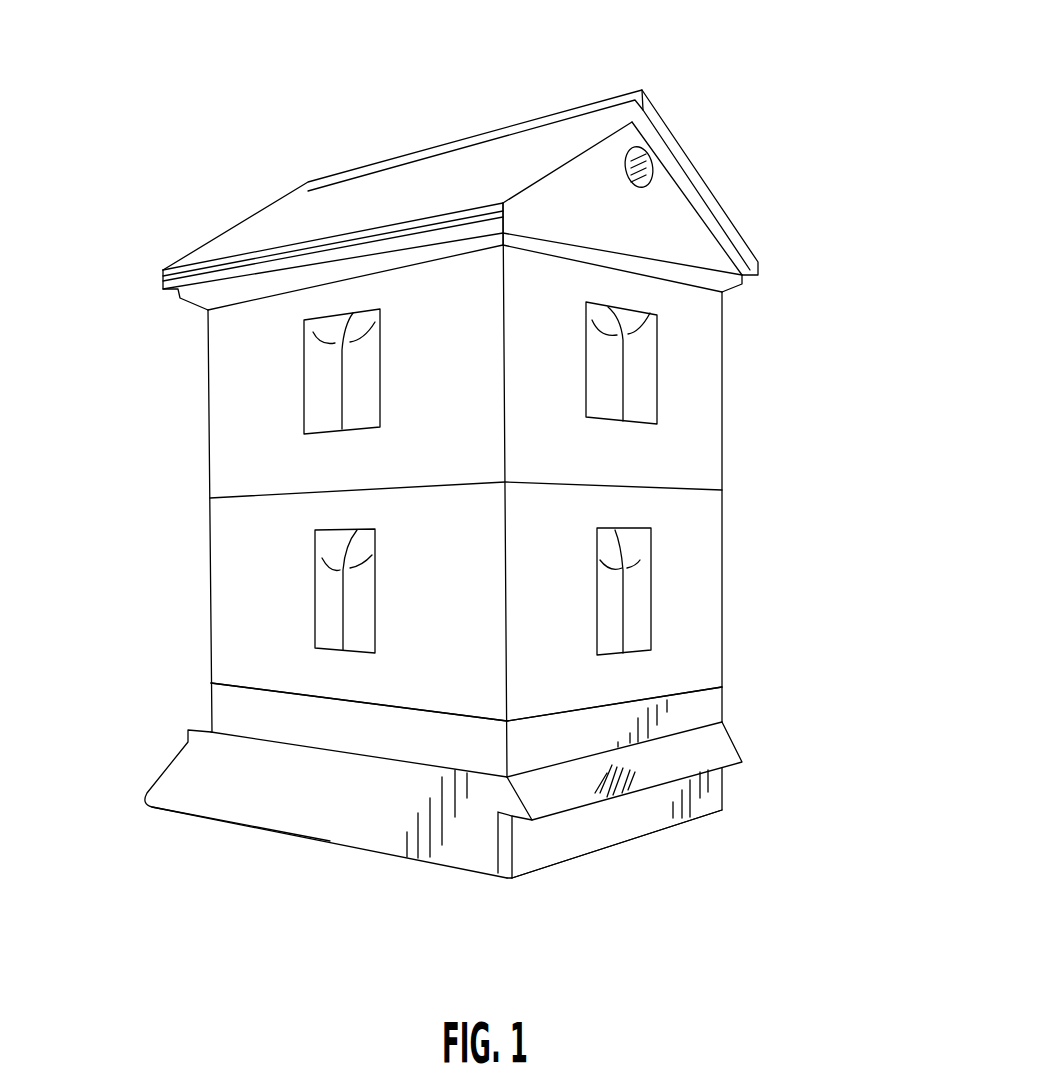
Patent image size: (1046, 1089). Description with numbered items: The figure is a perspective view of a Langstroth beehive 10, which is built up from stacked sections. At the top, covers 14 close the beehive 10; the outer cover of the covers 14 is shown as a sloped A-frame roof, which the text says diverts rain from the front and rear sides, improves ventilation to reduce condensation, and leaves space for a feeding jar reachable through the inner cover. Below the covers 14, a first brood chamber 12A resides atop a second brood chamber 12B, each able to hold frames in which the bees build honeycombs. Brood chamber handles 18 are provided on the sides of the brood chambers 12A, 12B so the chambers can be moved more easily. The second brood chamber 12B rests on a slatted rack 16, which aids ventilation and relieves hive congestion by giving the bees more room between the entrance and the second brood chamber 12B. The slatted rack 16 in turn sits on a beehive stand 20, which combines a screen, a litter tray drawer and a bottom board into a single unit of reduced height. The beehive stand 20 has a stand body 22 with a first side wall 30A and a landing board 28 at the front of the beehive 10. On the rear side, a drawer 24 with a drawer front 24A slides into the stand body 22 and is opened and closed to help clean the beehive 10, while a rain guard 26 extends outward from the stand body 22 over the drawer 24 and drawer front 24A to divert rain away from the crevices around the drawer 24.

The beehive 10 is at (732, 106).
The first brood chamber 12A is at (723, 388).
The second brood chamber 12B is at (723, 594).
The covers 14 is at (677, 195).
The slatted rack 16 is at (708, 720).
The brood chamber handles 18 is at (332, 332).
The beehive stand 20 is at (748, 797).
The stand body 22 is at (392, 817).
The drawer 24 is at (570, 843).
The drawer front 24A is at (657, 817).
The rain guard 26 is at (697, 753).
The landing board 28 is at (168, 767).
The first side wall 30A is at (243, 800).